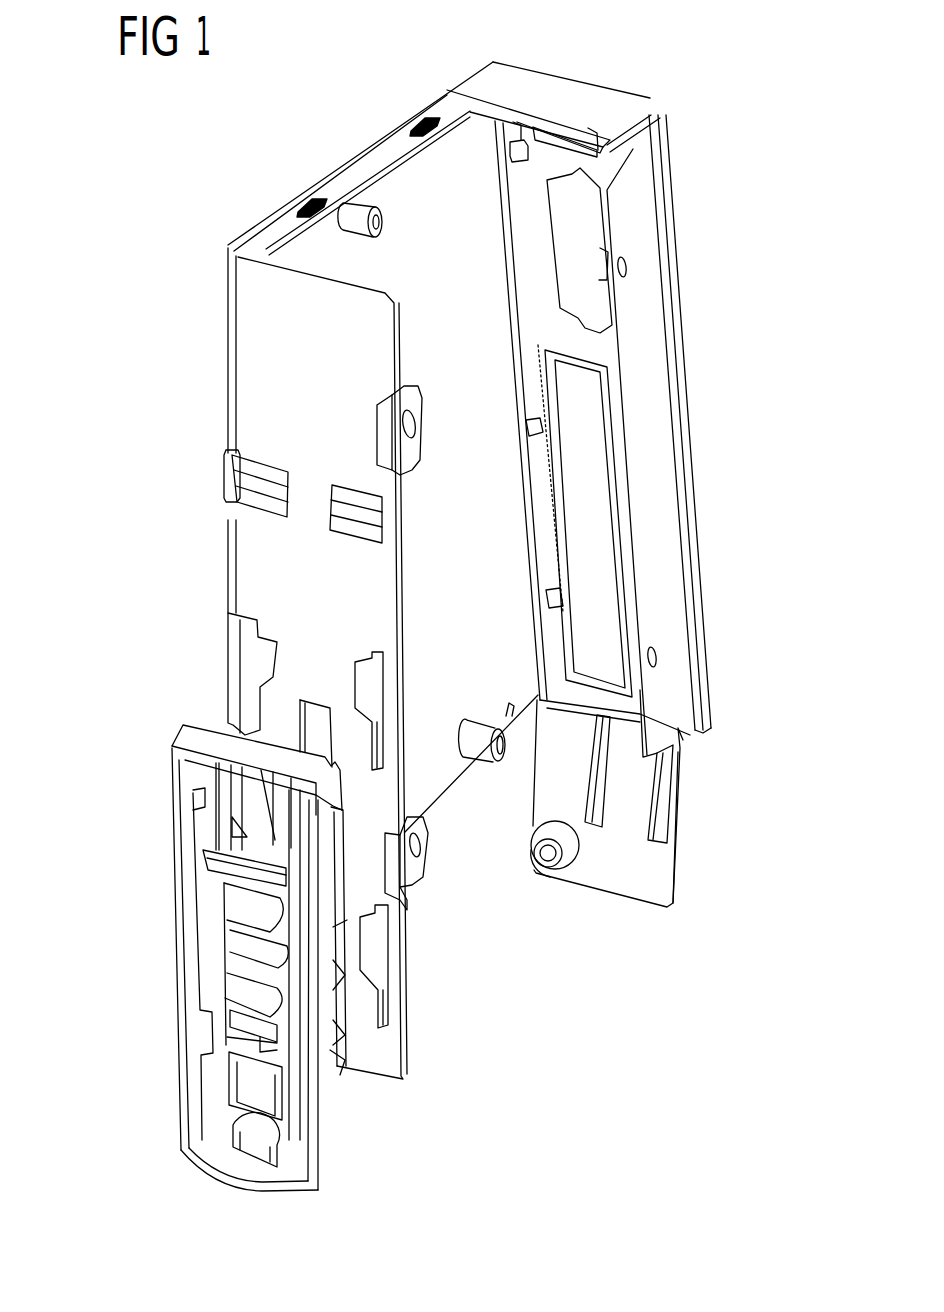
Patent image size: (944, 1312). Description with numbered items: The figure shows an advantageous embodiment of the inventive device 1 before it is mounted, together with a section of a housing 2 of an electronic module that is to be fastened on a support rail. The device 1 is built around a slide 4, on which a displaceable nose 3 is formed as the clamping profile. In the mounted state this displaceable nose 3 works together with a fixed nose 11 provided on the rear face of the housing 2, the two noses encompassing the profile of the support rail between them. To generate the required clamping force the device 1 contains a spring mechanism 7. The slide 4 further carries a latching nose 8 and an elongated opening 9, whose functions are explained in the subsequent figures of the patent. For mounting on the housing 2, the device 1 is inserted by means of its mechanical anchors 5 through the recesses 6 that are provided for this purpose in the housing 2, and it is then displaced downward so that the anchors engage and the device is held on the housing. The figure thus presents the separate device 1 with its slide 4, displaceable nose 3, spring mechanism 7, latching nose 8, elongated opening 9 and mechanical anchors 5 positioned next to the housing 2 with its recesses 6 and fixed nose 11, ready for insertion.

The device 1 is at (140, 804).
The housing 2 is at (208, 380).
The displaceable nose 3 is at (193, 742).
The slide 4 is at (210, 942).
The mechanical anchors 5 is at (327, 793).
The recesses 6 is at (252, 664).
The spring mechanism 7 is at (240, 988).
The latching nose 8 is at (252, 812).
The elongated opening 9 is at (262, 1140).
The fixed nose 11 is at (345, 531).